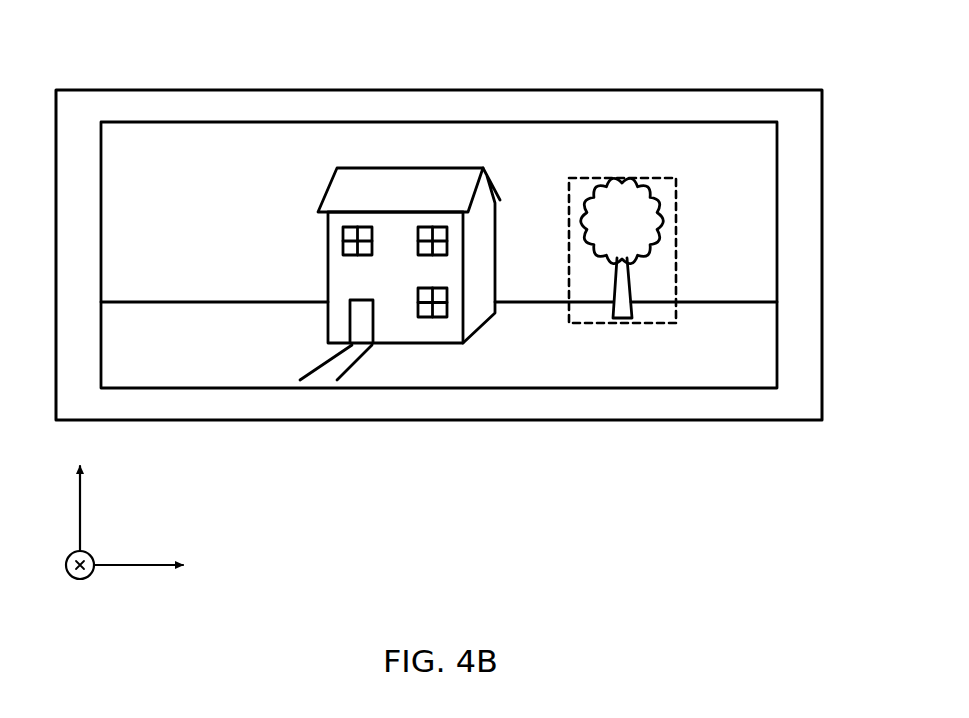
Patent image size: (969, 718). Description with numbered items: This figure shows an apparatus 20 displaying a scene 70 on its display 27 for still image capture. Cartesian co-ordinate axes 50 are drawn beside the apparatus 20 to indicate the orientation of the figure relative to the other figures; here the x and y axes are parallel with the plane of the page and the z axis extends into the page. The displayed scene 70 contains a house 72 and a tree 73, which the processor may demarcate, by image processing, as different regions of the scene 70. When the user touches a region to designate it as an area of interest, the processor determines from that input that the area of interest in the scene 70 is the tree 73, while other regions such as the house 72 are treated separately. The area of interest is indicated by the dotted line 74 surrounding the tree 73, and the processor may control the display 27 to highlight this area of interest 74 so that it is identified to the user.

The apparatus 20 is at (775, 90).
The display 27 is at (667, 122).
The scene 70 is at (283, 328).
The house 72 is at (299, 224).
The tree 73 is at (599, 284).
The dotted line 74 is at (677, 198).
The Cartesian co-ordinate axes 50 is at (119, 575).